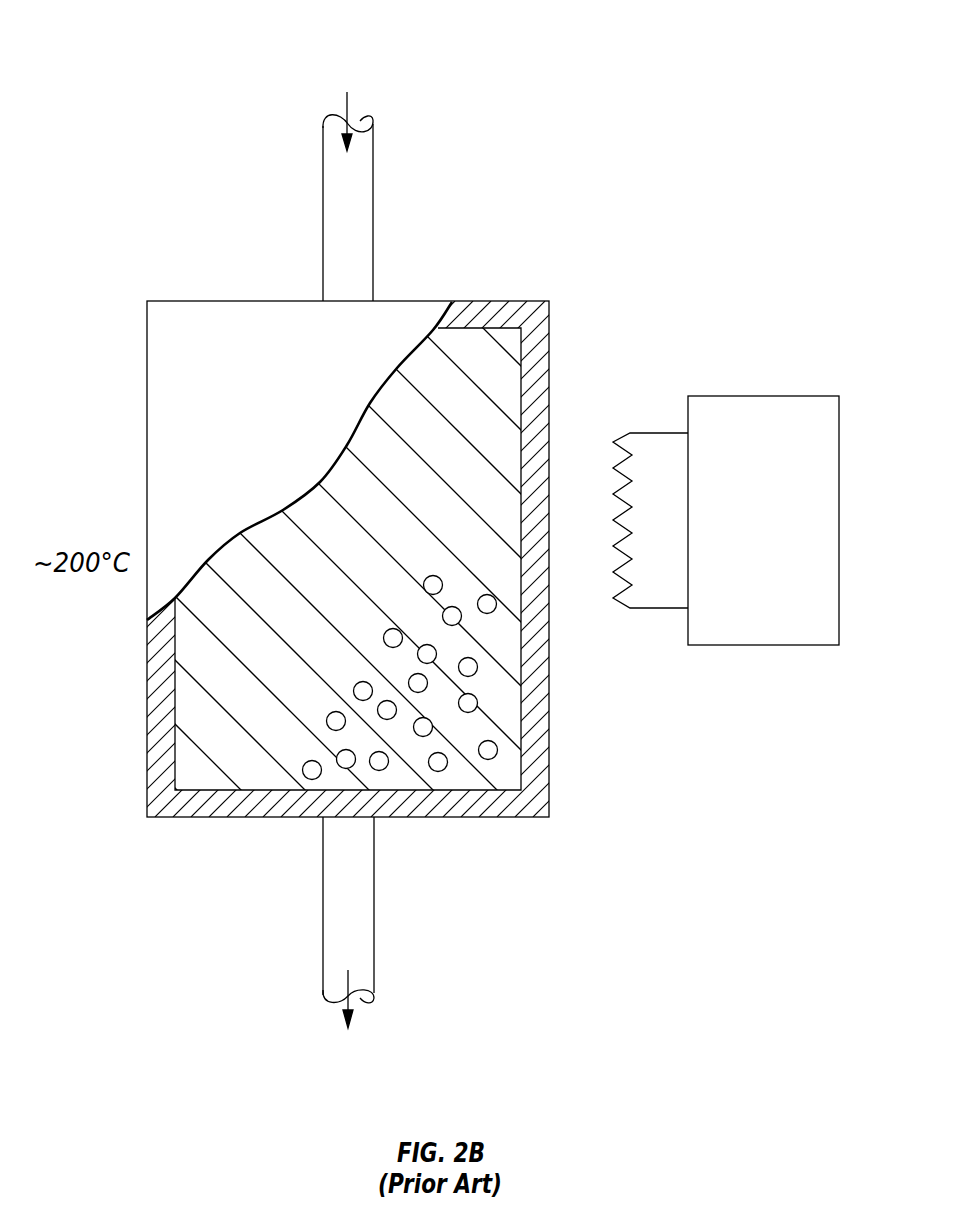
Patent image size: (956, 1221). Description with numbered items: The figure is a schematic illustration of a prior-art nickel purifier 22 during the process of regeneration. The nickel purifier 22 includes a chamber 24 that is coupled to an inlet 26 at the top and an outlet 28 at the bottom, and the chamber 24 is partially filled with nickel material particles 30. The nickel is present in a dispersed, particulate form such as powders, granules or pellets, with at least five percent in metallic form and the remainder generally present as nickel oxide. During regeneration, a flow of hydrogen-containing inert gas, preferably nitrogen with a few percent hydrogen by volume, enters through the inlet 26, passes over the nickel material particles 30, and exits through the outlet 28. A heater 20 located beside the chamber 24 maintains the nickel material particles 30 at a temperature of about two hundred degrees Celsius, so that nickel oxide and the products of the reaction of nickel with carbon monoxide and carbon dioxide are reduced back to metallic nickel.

The heater 20 is at (839, 521).
The nickel purifier 22 is at (198, 74).
The chamber 24 is at (510, 328).
The inlet 26 is at (373, 241).
The outlet 28 is at (323, 908).
The nickel material particles 30 is at (498, 751).